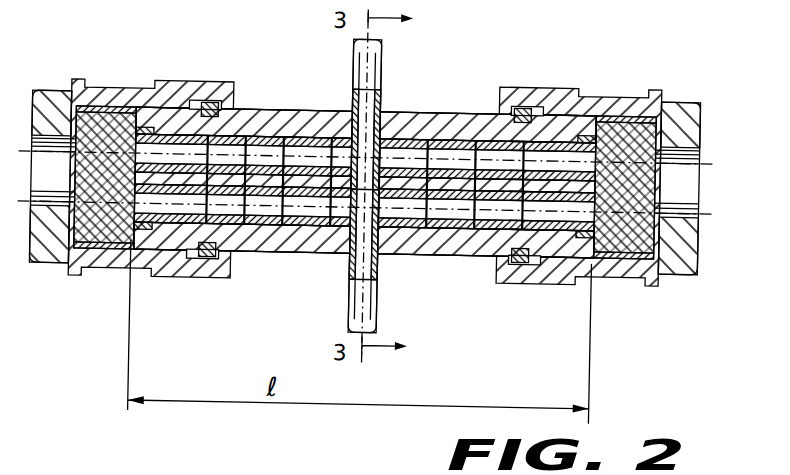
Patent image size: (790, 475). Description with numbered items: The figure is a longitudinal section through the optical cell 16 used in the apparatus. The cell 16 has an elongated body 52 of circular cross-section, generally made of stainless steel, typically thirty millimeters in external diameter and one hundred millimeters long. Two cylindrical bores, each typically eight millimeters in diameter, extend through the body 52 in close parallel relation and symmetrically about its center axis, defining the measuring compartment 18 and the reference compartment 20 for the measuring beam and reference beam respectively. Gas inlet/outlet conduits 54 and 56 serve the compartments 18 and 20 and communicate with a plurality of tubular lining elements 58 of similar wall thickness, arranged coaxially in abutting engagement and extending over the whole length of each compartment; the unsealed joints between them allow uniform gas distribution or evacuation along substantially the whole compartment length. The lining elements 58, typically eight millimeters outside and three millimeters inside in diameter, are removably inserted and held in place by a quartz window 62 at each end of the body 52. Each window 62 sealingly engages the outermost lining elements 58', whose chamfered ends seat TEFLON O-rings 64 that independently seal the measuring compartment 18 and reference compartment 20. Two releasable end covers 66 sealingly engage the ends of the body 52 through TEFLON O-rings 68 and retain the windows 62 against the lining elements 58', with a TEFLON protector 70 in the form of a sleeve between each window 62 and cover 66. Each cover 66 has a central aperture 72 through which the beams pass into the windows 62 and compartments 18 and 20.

The optical cell 16 is at (490, 58).
The measuring compartment 18 is at (464, 104).
The reference compartment 20 is at (446, 229).
The elongated body 52 is at (426, 114).
The gas inlet/outlet conduit 54 is at (381, 40).
The gas inlet/outlet conduit 56 is at (352, 291).
The tubular lining elements 58 is at (365, 149).
The outermost lining elements 58' is at (368, 176).
The quartz window 62 is at (96, 258).
The O-rings 64 is at (174, 129).
The end covers 66 is at (52, 106).
The O-rings 68 is at (217, 108).
The protector 70 is at (96, 101).
The central aperture 72 is at (53, 252).